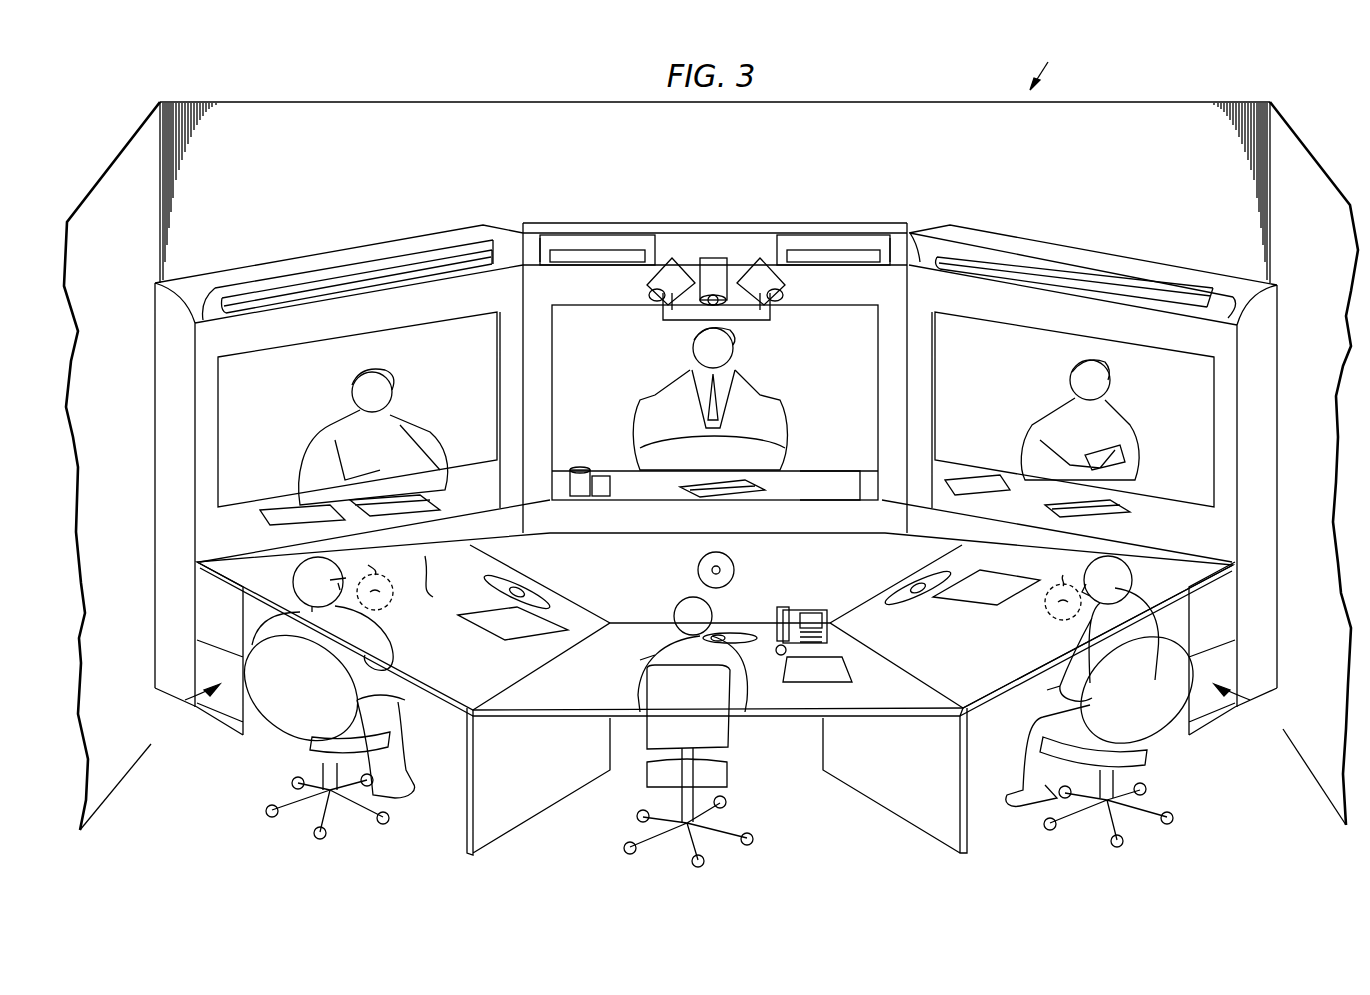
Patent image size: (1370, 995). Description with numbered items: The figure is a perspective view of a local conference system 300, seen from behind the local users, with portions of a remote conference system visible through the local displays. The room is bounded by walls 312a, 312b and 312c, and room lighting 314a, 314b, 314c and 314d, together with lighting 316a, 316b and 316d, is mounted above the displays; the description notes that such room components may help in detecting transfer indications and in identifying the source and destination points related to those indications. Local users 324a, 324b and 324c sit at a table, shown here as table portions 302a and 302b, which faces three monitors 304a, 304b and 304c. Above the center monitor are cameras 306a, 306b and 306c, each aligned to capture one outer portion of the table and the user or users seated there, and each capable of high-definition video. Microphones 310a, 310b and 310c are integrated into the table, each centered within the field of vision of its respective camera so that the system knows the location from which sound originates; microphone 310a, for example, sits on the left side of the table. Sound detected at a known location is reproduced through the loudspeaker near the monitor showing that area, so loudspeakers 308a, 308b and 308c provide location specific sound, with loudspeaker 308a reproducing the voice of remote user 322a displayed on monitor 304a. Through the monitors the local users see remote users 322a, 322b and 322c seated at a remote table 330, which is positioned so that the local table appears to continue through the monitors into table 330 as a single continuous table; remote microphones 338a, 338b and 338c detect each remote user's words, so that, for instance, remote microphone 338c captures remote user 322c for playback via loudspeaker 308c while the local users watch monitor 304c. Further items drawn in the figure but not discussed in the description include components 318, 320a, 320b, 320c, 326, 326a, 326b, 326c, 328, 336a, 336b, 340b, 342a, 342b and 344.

The conference system 300 is at (1054, 62).
The table 302a is at (945, 678).
The table 302b is at (275, 584).
The monitor 304a is at (425, 360).
The monitor 304b is at (815, 360).
The monitor 304c is at (959, 360).
The camera 306a is at (680, 262).
The camera 306b is at (715, 258).
The camera 306c is at (748, 262).
The loudspeaker 308a is at (368, 565).
The loudspeaker 308b is at (698, 569).
The loudspeaker 308c is at (1063, 575).
The microphone 310a is at (540, 596).
The microphone 310b is at (745, 633).
The microphone 310c is at (900, 586).
The wall 312a is at (96, 248).
The wall 312b is at (270, 160).
The wall 312c is at (1289, 245).
The lighting 314a is at (390, 270).
The lighting 314b is at (600, 250).
The lighting 314c is at (825, 250).
The lighting 314d is at (1045, 278).
The lighting 316a is at (310, 285).
The lighting 316b is at (555, 242).
The lighting 316d is at (1120, 275).
The telephone 318 is at (805, 608).
The touch panel 320a is at (490, 627).
The touch panel 320b is at (850, 666).
The touch panel 320c is at (990, 578).
The remote user 322a is at (345, 434).
The remote user 322b is at (760, 402).
The remote user 322c is at (1115, 437).
The local user 324a is at (385, 608).
The local user 324b is at (640, 660).
The local user 324c is at (1075, 621).
The cabinet 326 is at (243, 574).
The remote document 326a is at (270, 510).
The remote table 326b is at (615, 466).
The remote document 326c is at (975, 476).
The remote cups 328 is at (588, 470).
The remote table 330 is at (820, 480).
The table leg panel 336a is at (545, 806).
The table leg panel 336b is at (893, 806).
The remote microphone 338a is at (450, 492).
The remote microphone 338b is at (762, 492).
The remote microphone 338c is at (1122, 514).
The center table section 340b is at (607, 607).
The storage compartment 342a is at (185, 700).
The storage compartment 342b is at (1250, 700).
The audio pickup region 344 is at (418, 561).